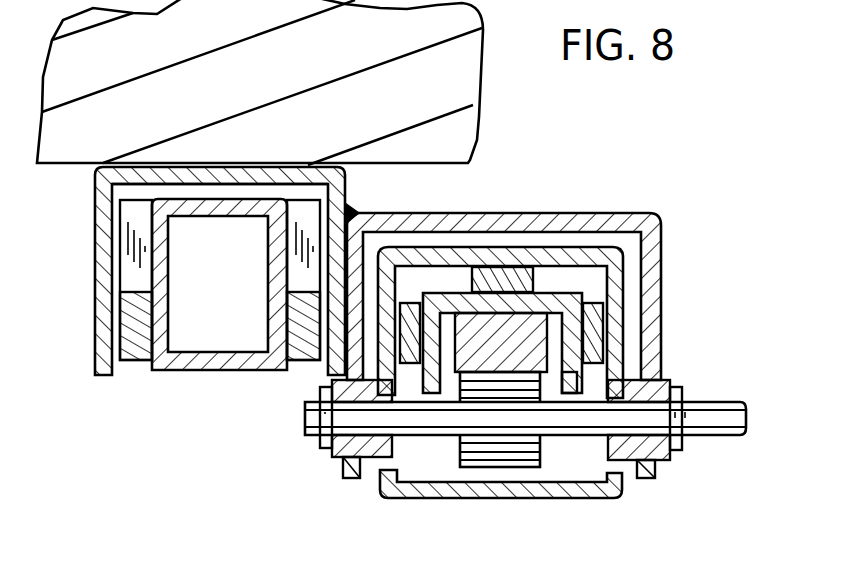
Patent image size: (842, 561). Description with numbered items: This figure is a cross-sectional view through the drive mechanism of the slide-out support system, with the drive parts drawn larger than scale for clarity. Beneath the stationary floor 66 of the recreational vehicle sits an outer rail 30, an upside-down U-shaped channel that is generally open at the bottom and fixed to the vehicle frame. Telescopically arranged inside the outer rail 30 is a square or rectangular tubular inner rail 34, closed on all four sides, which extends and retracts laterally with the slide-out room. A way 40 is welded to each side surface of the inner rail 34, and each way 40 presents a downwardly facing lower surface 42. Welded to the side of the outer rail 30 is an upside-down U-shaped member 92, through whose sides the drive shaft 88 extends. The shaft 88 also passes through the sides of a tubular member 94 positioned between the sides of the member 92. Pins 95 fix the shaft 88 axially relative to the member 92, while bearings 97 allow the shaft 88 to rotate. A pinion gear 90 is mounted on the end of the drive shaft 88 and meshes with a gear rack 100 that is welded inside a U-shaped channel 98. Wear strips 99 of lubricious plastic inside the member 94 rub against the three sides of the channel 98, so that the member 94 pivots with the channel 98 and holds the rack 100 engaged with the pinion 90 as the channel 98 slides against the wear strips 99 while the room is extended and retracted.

The outer rail 30 is at (100, 250).
The inner rail 34 is at (228, 383).
The way 40 is at (349, 210).
The lower surface 42 is at (140, 362).
The stationary floor 66 is at (480, 129).
The drive shaft 88 is at (733, 402).
The pinion gear 90 is at (497, 466).
The upside-down U-shaped member 92 is at (662, 251).
The tubular member 94 is at (594, 217).
The pin 95 is at (320, 445).
The bearing 97 is at (380, 463).
The U-shaped channel 98 is at (553, 378).
The wear strip 99 is at (423, 277).
The gear rack 100 is at (556, 329).